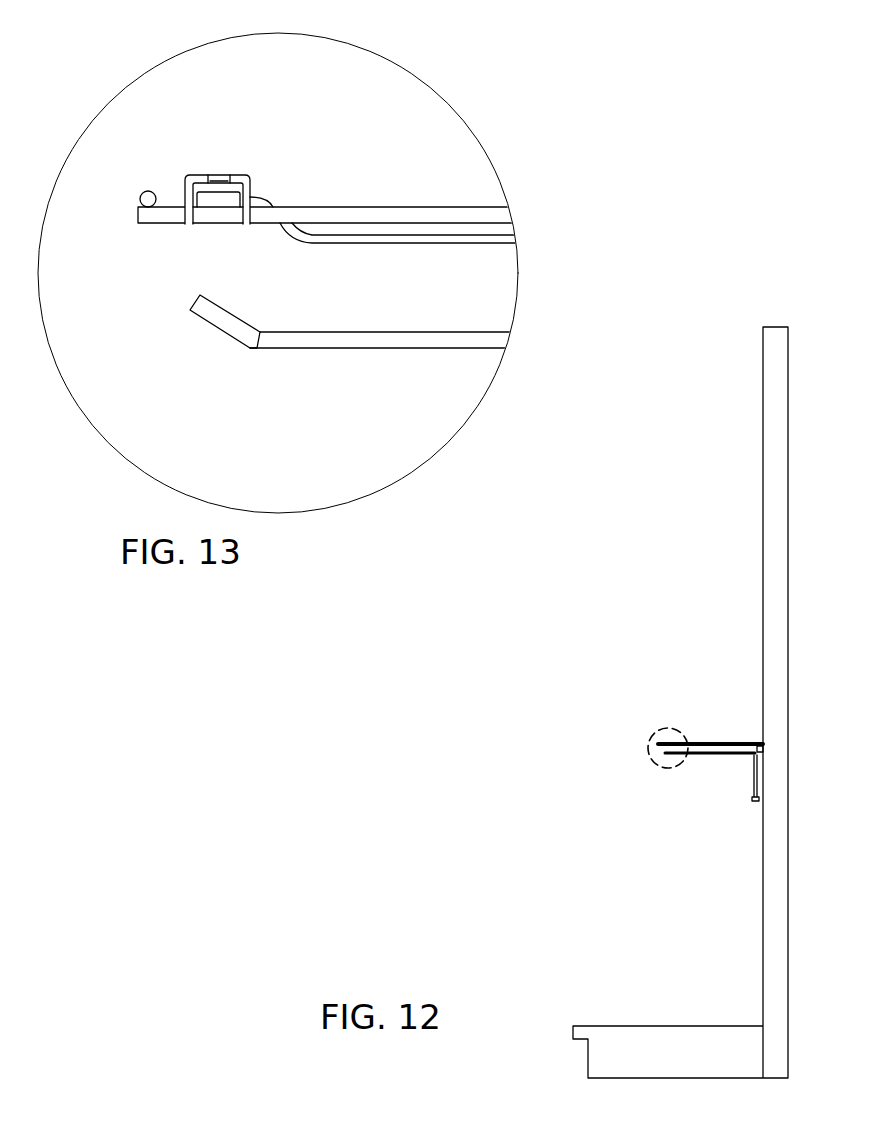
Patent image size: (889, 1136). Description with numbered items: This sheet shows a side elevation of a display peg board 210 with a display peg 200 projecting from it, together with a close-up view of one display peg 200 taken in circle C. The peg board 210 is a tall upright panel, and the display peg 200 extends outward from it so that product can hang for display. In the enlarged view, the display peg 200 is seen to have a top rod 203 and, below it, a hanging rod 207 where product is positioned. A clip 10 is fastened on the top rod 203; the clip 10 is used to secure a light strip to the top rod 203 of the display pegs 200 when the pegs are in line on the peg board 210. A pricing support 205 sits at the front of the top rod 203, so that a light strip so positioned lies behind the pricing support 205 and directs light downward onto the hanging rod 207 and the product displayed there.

In FIG. 13, the clip 10 is at (250, 183).
In FIG. 13, the top rod 203 is at (505, 215).
In FIG. 13, the pricing support 205 is at (141, 200).
In FIG. 13, the hanging rod 207 is at (378, 337).
In FIG. 12, the display peg 200 is at (732, 743).
In FIG. 12, the peg board 210 is at (775, 910).
In FIG. 12, the circle C is at (650, 757).